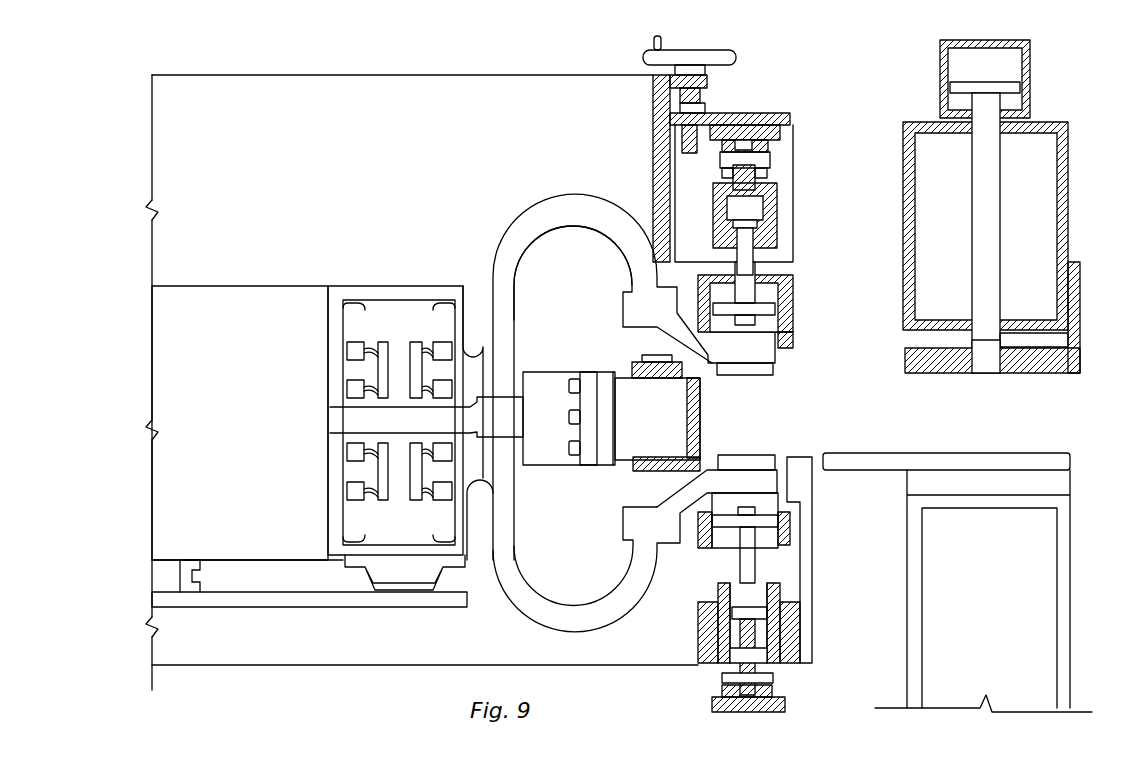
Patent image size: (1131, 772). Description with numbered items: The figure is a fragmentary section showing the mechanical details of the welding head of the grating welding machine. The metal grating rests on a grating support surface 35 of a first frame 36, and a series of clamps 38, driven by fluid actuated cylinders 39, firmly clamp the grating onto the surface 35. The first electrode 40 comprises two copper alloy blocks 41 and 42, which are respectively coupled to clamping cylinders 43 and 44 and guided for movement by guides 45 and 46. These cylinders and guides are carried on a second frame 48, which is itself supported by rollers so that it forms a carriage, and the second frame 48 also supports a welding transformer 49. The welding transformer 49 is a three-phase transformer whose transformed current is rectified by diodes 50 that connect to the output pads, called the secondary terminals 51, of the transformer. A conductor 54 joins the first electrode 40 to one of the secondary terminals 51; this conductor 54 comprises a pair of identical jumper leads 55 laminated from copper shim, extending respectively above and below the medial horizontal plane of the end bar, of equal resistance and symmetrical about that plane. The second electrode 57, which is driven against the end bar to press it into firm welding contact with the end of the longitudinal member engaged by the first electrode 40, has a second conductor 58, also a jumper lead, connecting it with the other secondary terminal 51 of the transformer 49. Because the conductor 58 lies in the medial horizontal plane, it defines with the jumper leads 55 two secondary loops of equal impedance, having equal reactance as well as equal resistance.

The grating support surface 35 is at (848, 453).
The first frame 36 is at (1077, 562).
The clamps 38 is at (1050, 372).
The fluid actuated cylinders 39 is at (1033, 74).
The first electrode 40 is at (783, 367).
The copper alloy block 41 is at (728, 371).
The copper alloy block 42 is at (726, 463).
The clamping cylinder 43 is at (775, 211).
The clamping cylinder 44 is at (700, 633).
The guide 45 is at (797, 309).
The guide 46 is at (693, 555).
The second frame 48 is at (380, 190).
The welding transformer 49 is at (254, 418).
The diodes 50 is at (356, 341).
The secondary terminals 51 is at (470, 373).
The conductor 54 is at (516, 210).
The jumper leads 55 is at (540, 227).
The second electrode 57 is at (633, 472).
The second conductor 58 is at (550, 455).